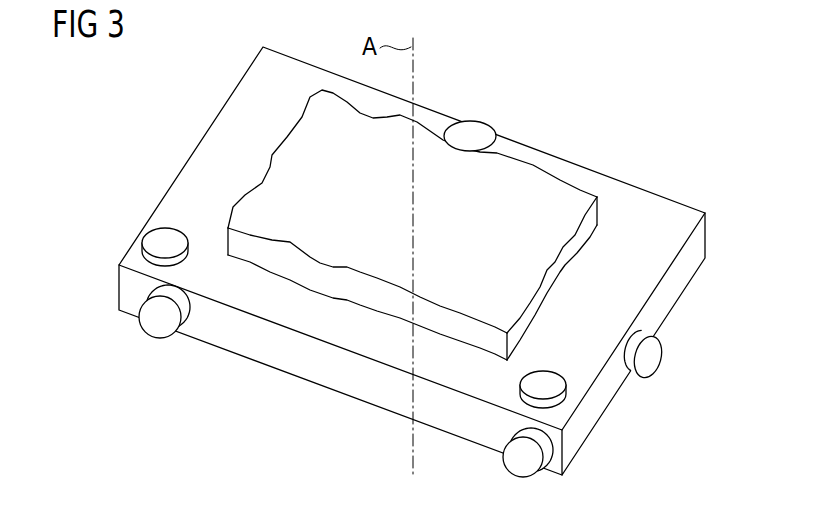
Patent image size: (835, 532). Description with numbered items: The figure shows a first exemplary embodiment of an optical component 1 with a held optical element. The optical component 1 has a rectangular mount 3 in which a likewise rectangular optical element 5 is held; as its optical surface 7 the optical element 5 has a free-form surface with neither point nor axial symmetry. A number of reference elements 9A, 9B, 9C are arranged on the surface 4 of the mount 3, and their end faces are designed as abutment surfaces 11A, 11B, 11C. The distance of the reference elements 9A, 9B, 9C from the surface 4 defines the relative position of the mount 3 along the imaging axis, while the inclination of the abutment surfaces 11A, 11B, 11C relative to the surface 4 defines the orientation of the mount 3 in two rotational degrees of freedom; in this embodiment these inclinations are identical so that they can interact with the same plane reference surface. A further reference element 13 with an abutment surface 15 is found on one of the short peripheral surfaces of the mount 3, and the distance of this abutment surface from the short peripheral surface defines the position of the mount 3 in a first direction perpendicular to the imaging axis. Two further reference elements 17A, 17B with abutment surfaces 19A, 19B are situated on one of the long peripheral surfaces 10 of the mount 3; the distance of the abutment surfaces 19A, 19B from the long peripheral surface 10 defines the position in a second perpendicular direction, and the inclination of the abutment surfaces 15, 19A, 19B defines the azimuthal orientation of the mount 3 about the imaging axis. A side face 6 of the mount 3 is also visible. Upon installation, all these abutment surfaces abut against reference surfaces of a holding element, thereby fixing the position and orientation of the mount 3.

The optical component 1 is at (588, 78).
The mount 3 is at (673, 218).
The surface of the mount 4 is at (668, 237).
The optical element 5 is at (598, 232).
The side face of carrier 6 is at (677, 277).
The optical surface 7 is at (357, 130).
The reference element 9A is at (550, 396).
The reference element 9B is at (155, 244).
The reference element 9C is at (470, 118).
The long peripheral surface 10 is at (278, 380).
The abutment surface 11A is at (546, 381).
The abutment surface 11B is at (170, 240).
The abutment surface 11C is at (492, 122).
The further reference element 13 is at (643, 335).
The abutment surface 15 is at (645, 357).
The further reference element 17A is at (523, 427).
The further reference element 17B is at (170, 285).
The abutment surface 19A is at (523, 452).
The abutment surface 19B is at (158, 320).